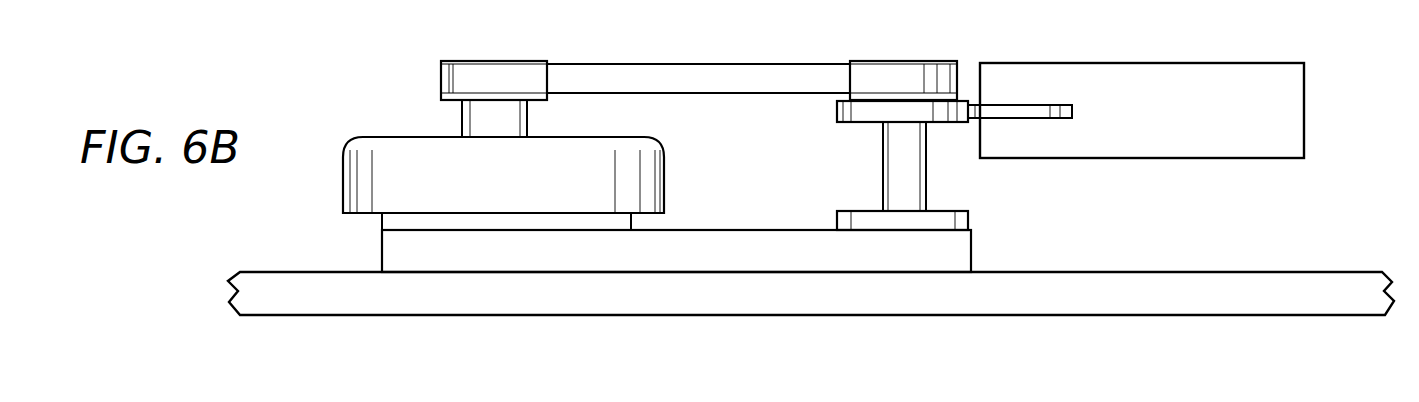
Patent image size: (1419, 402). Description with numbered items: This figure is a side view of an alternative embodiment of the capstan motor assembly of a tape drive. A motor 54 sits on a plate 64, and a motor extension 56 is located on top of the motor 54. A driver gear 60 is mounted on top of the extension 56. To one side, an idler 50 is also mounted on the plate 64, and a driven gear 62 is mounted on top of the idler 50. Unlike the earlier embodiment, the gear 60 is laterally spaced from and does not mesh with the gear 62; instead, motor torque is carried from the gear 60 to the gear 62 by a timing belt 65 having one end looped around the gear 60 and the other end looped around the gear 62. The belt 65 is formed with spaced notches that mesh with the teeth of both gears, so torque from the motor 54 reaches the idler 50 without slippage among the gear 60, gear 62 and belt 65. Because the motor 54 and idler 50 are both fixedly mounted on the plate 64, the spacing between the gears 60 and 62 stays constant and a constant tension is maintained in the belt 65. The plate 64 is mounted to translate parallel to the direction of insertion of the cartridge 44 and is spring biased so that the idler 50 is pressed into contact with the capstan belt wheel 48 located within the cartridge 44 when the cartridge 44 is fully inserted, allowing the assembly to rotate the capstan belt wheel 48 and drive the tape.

The cartridge 44 is at (1137, 63).
The capstan belt wheel 48 is at (1012, 104).
The idler 50 is at (836, 111).
The motor 54 is at (663, 172).
The motor extension 56 is at (528, 126).
The driver gear 60 is at (503, 60).
The driven gear 62 is at (895, 60).
The plate 64 is at (973, 251).
The timing belt 65 is at (650, 63).